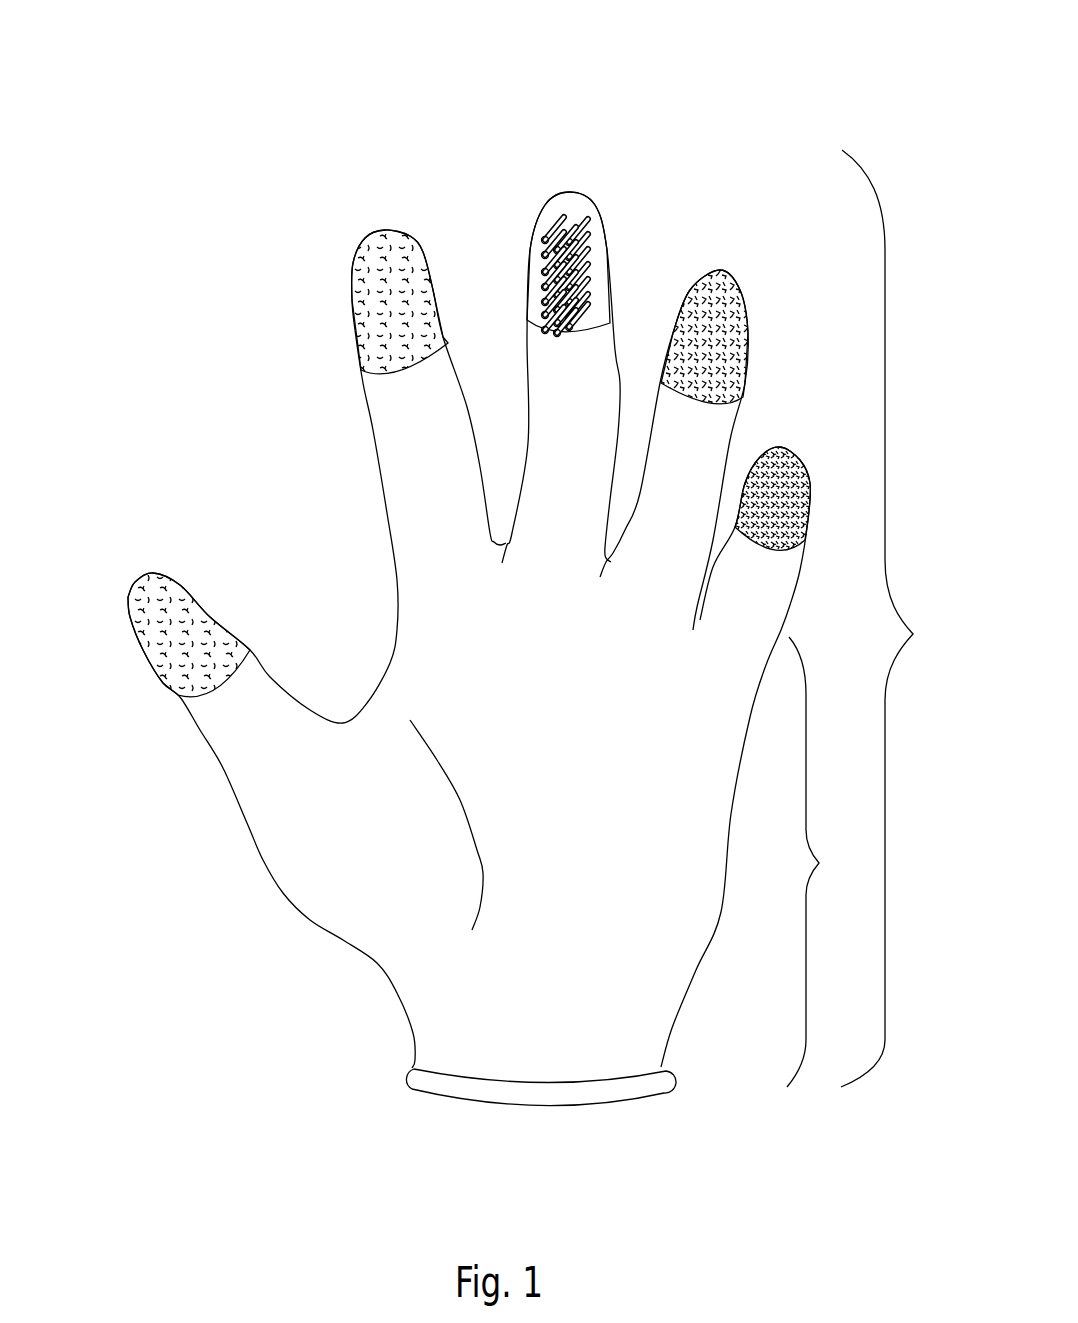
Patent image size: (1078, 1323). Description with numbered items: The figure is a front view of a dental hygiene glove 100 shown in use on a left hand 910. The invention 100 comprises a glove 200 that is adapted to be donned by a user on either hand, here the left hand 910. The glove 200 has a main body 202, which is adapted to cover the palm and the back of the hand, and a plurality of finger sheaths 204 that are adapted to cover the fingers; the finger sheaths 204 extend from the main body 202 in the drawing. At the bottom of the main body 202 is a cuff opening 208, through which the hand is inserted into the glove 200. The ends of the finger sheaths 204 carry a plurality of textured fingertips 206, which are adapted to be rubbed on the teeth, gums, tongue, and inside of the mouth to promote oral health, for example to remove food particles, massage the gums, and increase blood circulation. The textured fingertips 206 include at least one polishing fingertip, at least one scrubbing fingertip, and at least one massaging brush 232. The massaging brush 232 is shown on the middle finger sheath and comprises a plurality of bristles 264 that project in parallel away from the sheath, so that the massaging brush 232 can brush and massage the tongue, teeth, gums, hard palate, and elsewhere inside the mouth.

The dental hygiene glove 100 is at (120, 175).
The left hand 910 is at (120, 933).
The glove 200 is at (901, 618).
The main body 202 is at (635, 917).
The plurality of finger sheaths 204 is at (753, 610).
The plurality of textured fingertips 206 is at (787, 450).
The cuff opening 208 is at (583, 1108).
The massaging brush 232 is at (595, 222).
The plurality of bristles 264 is at (545, 230).